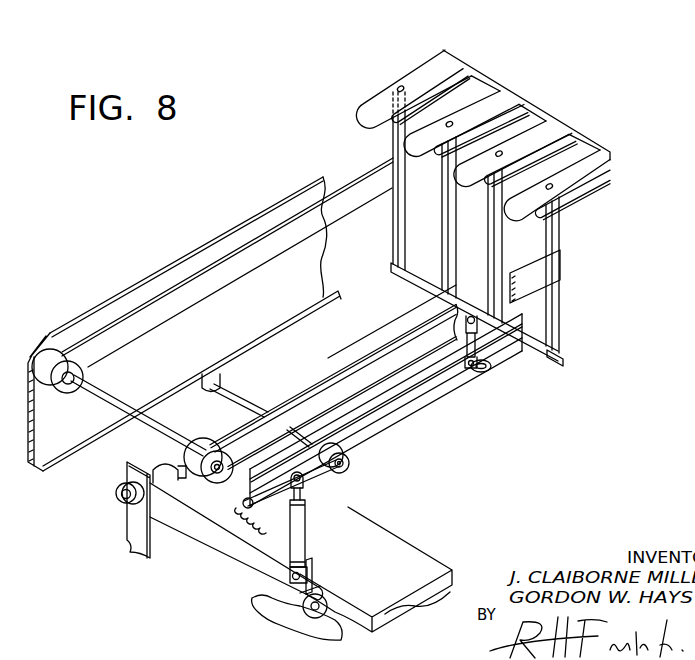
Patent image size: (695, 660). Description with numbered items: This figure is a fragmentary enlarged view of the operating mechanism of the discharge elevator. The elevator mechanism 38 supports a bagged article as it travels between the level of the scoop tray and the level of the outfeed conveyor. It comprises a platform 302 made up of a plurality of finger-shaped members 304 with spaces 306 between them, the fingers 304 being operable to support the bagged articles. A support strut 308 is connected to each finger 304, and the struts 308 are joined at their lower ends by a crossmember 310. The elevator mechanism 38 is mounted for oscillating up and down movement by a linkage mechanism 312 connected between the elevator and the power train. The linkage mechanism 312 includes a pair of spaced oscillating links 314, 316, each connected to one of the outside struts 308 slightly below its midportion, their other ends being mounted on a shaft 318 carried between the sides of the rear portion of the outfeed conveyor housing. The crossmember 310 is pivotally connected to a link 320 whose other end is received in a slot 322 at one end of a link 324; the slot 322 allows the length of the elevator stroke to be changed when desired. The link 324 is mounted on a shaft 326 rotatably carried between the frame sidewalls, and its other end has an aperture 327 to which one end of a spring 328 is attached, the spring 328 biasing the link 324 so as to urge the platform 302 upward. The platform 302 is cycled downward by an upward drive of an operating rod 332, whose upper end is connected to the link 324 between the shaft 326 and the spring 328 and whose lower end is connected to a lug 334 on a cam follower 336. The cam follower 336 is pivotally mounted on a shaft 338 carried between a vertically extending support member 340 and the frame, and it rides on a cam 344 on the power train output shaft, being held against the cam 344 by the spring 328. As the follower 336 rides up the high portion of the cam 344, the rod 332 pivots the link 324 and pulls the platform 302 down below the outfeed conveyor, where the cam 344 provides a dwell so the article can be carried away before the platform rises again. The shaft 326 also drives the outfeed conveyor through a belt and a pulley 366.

The elevator mechanism 38 is at (518, 211).
The platform 302 is at (542, 115).
The finger-shaped members 304 is at (462, 113).
The spaces 306 is at (453, 85).
The support strut 308 is at (560, 242).
The crossmember 310 is at (563, 360).
The linkage mechanism 312 is at (303, 462).
The oscillating link 314 is at (417, 340).
The oscillating link 316 is at (240, 270).
The shaft 318 is at (147, 420).
The link 320 is at (478, 350).
The slot 322 is at (492, 382).
The link 324 is at (430, 400).
The shaft 326 is at (346, 470).
The aperture 327 is at (268, 481).
The spring 328 is at (233, 514).
The operating rod 332 is at (308, 510).
The lug 334 is at (313, 572).
The cam follower 336 is at (215, 555).
The shaft 338 is at (116, 497).
The support member 340 is at (128, 472).
The cam 344 is at (255, 610).
The pulley 366 is at (82, 372).